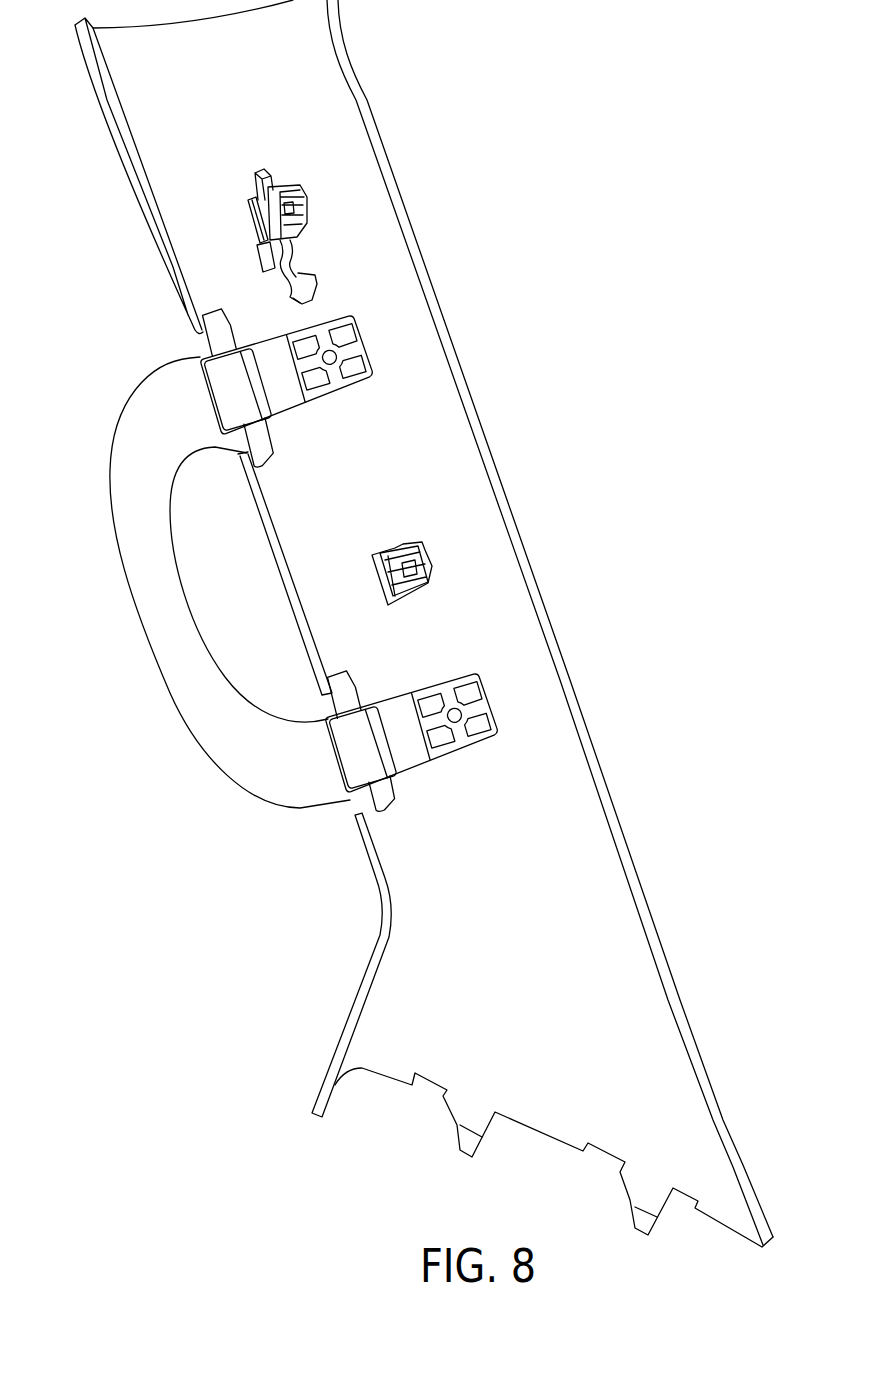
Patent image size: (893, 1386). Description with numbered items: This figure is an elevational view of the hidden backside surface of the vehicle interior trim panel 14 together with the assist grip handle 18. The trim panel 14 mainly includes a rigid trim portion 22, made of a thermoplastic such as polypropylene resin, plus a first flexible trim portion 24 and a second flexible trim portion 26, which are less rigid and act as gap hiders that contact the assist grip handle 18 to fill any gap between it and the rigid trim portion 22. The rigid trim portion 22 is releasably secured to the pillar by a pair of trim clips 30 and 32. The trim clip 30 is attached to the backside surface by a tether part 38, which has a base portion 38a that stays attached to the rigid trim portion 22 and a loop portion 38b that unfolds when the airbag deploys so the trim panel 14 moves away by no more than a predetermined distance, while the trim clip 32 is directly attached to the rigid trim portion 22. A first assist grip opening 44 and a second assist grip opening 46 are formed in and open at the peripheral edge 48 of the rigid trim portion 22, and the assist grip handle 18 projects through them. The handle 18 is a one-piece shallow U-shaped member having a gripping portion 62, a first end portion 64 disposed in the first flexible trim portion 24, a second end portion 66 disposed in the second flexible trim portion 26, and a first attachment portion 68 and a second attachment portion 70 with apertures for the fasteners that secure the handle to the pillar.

The vehicle interior trim panel 14 is at (600, 747).
The assist grip handle 18 is at (275, 587).
The rigid trim portion 22 is at (577, 855).
The first flexible trim portion 24 is at (262, 445).
The second flexible trim portion 26 is at (383, 812).
The trim clip 30 is at (289, 219).
The trim clip 32 is at (428, 552).
The tether part 38 is at (289, 270).
The base portion 38a is at (250, 218).
The loop portion 38b is at (296, 268).
The first assist grip opening 44 is at (192, 336).
The second assist grip opening 46 is at (325, 697).
The peripheral edge 48 is at (288, 558).
The gripping portion 62 is at (133, 611).
The first end portion 64 is at (192, 358).
The second end portion 66 is at (322, 810).
The first attachment portion 68 is at (358, 385).
The second attachment portion 70 is at (480, 747).